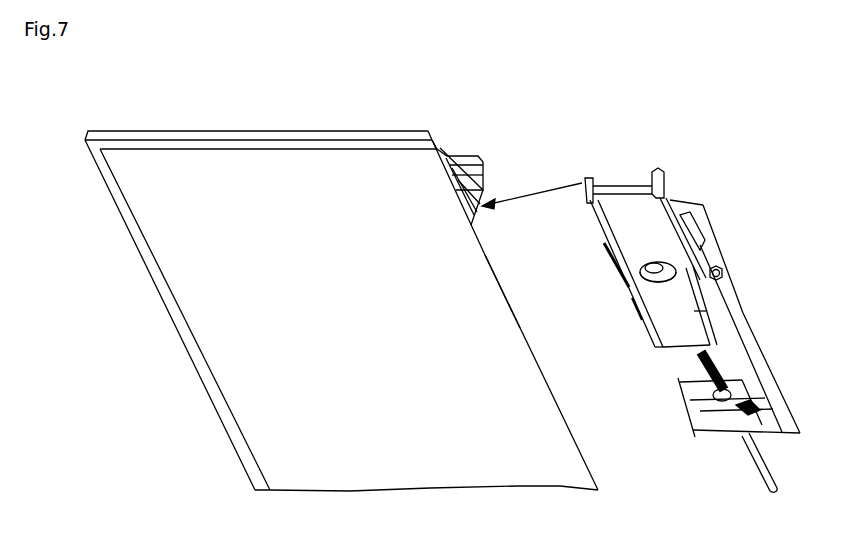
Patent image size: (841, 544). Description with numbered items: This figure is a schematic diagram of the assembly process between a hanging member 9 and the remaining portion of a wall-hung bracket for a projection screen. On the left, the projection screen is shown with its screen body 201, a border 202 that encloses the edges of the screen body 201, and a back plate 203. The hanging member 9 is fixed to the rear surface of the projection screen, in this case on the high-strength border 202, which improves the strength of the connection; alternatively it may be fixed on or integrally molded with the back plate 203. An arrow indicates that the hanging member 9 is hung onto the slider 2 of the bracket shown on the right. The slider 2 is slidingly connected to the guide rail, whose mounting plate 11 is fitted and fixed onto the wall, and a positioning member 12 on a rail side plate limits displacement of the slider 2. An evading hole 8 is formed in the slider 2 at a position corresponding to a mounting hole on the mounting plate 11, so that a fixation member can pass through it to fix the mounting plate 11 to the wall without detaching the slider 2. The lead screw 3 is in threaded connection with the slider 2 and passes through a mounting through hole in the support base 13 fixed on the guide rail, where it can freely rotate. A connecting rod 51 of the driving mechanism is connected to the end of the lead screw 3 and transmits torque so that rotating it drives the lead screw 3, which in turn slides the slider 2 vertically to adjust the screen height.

The slider 2 is at (620, 208).
The lead screw 3 is at (700, 372).
The evading hole 8 is at (664, 272).
The hanging member 9 is at (488, 186).
The mounting plate 11 is at (743, 313).
The positioning member 12 is at (688, 280).
The support base 13 is at (702, 400).
The connecting rod 51 is at (756, 452).
The screen body 201 is at (376, 222).
The border 202 is at (246, 136).
The back plate 203 is at (482, 305).